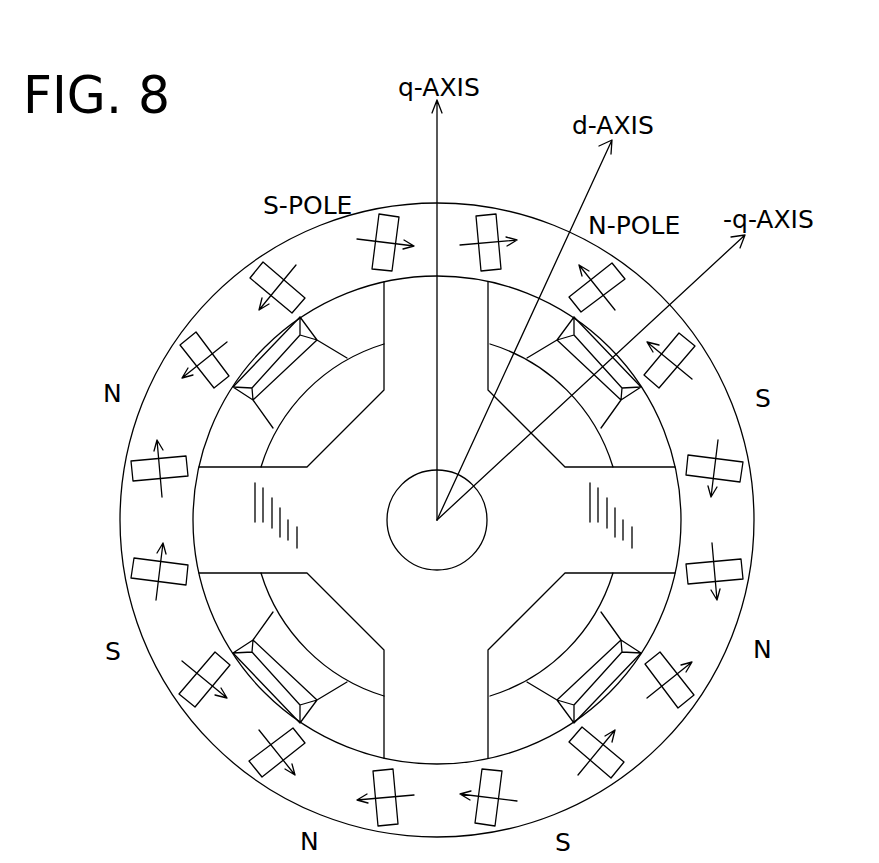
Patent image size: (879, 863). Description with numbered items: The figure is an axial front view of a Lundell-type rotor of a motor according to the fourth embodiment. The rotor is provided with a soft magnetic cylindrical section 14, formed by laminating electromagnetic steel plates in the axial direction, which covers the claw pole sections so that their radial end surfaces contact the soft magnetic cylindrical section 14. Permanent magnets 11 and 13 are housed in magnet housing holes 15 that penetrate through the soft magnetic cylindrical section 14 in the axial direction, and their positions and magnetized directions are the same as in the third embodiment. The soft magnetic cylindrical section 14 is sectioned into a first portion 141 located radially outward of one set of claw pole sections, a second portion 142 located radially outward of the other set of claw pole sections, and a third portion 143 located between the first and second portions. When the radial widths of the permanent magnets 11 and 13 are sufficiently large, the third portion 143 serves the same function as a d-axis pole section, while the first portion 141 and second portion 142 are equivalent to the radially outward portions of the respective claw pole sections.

The permanent magnet 11 is at (485, 220).
The permanent magnet 13 is at (388, 222).
The soft magnetic cylindrical section 14 is at (785, 534).
The magnet housing hole 15 is at (207, 337).
The first portion 141 is at (418, 215).
The second portion 142 is at (645, 295).
The third portion 143 is at (540, 240).